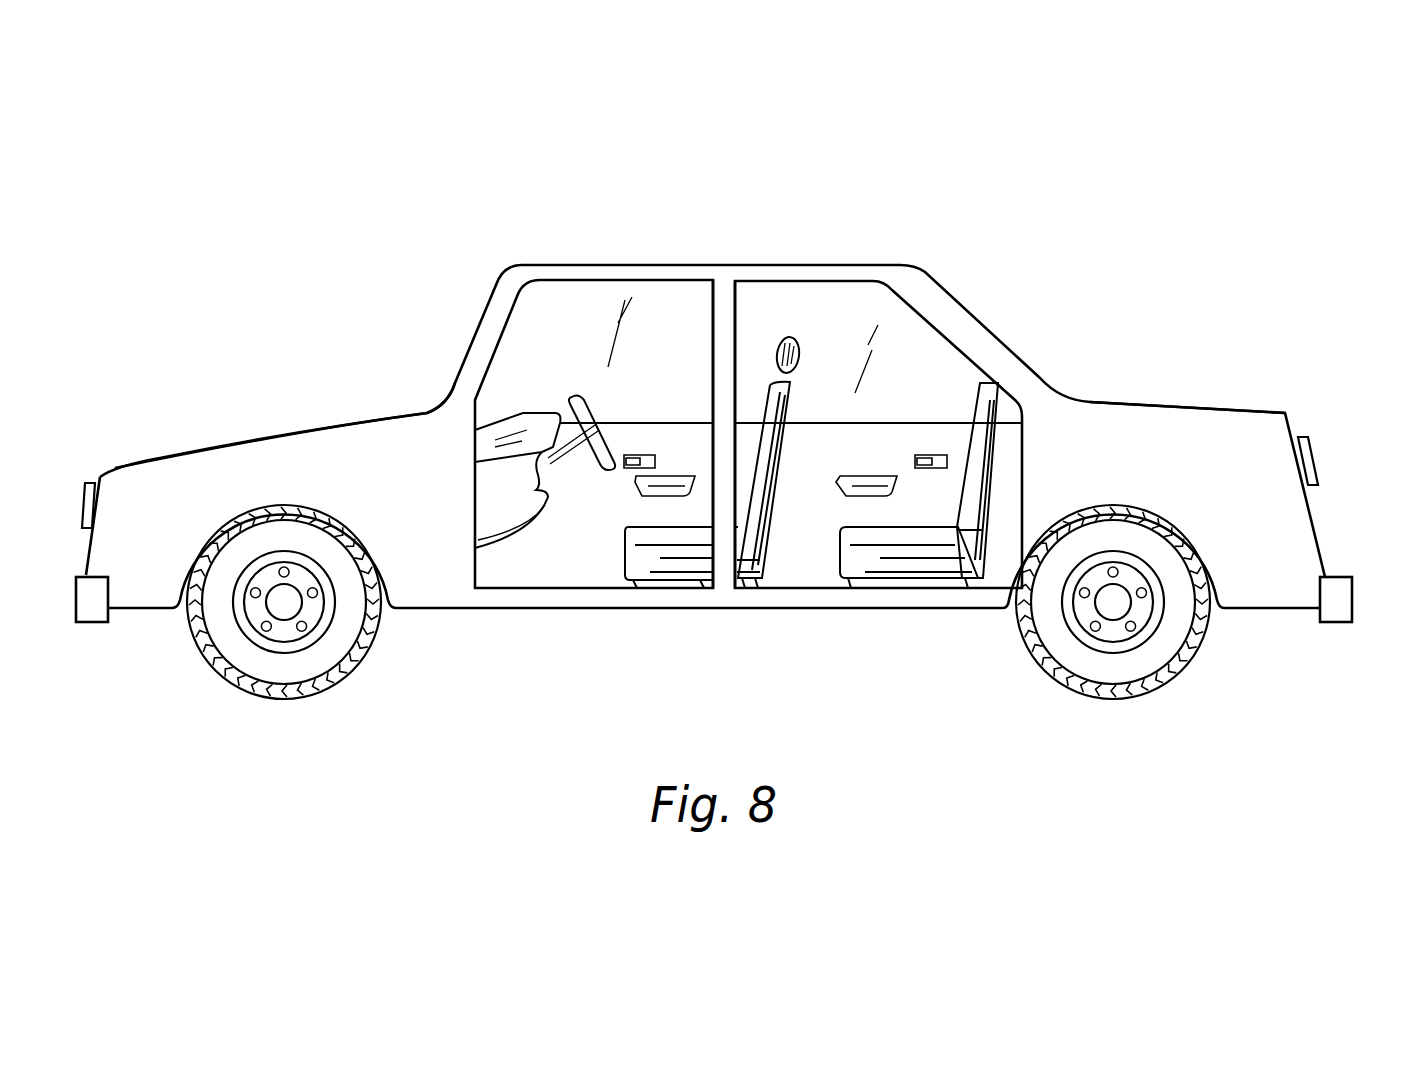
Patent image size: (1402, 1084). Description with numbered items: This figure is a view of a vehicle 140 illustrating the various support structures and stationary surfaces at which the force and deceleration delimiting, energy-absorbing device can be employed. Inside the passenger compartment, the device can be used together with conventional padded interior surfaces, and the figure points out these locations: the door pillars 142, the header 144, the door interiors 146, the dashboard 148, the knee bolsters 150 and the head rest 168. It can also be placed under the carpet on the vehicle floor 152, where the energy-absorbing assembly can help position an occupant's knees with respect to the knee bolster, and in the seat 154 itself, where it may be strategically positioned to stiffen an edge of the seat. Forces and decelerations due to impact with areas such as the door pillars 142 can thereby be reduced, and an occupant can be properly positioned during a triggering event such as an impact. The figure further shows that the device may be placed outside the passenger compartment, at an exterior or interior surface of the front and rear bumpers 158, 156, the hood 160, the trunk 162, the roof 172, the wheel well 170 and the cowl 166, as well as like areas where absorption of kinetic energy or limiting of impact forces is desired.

The vehicle 140 is at (1062, 200).
The door pillars 142 is at (487, 303).
The header 144 is at (560, 292).
The door interiors 146 is at (664, 426).
The dashboard 148 is at (531, 403).
The knee bolsters 150 is at (566, 503).
The vehicle floor 152 is at (556, 578).
The seat 154 is at (915, 520).
The bumper 156 is at (1353, 596).
The bumper 158 is at (76, 596).
The hood 160 is at (253, 432).
The trunk 162 is at (1175, 403).
The cowl 166 is at (450, 392).
The head rest 168 is at (770, 341).
The wheel well 170 is at (160, 588).
The roof 172 is at (728, 276).